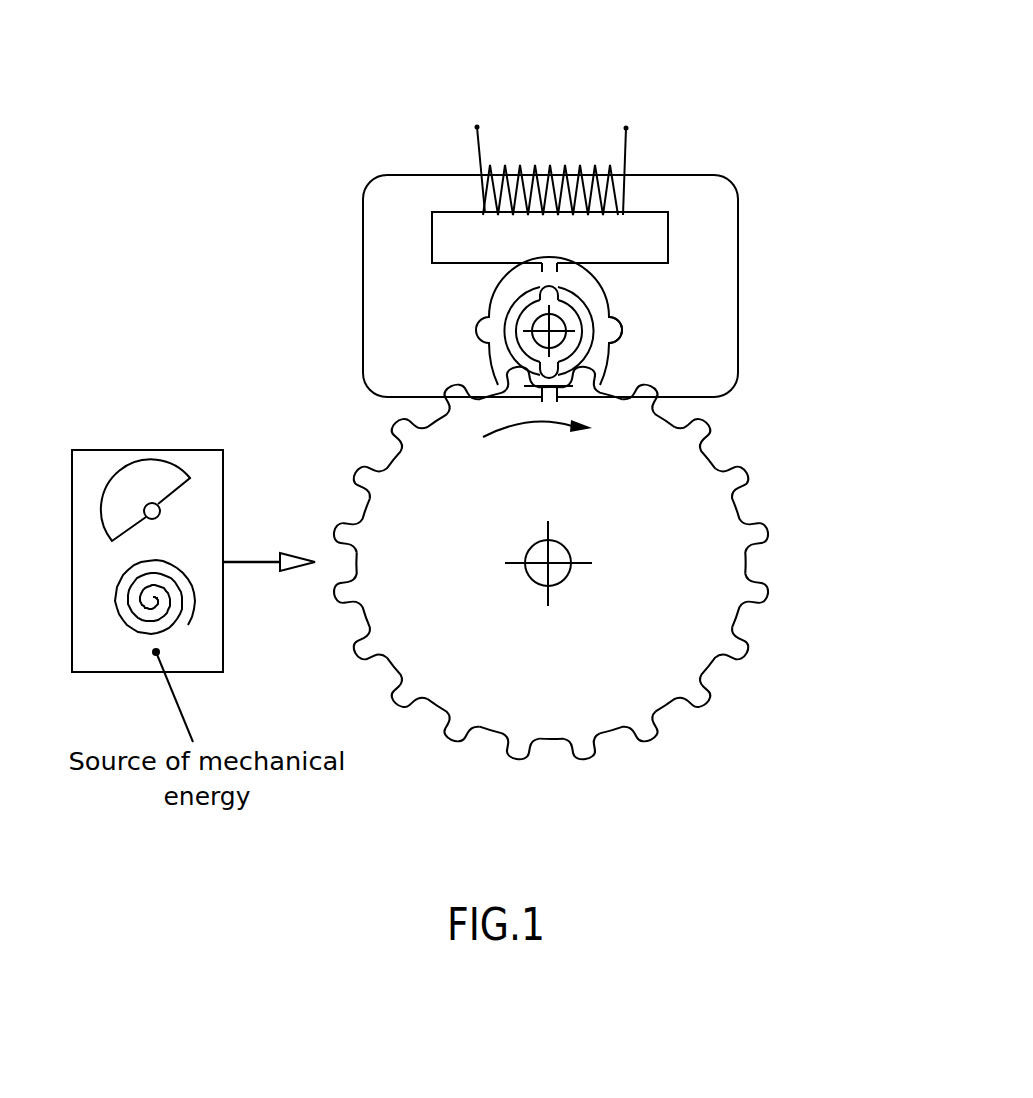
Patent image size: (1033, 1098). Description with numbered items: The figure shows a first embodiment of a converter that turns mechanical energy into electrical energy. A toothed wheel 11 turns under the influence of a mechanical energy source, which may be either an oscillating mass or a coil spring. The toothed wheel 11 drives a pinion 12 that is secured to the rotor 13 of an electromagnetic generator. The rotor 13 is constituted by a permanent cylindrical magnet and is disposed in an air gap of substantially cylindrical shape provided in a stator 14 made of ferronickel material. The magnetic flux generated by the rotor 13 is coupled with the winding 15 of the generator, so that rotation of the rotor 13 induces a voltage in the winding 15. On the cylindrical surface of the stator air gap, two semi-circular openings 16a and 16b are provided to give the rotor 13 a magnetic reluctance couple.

The toothed wheel 11 is at (698, 692).
The pinion 12 is at (549, 285).
The rotor 13 is at (580, 348).
The stator 14 is at (392, 203).
The winding 15 is at (625, 152).
The semi-circular opening 16a is at (477, 327).
The semi-circular opening 16b is at (622, 322).